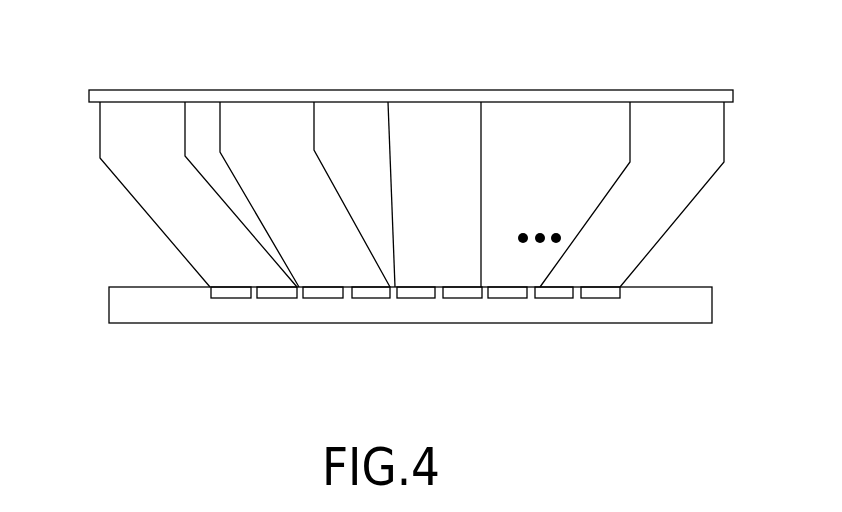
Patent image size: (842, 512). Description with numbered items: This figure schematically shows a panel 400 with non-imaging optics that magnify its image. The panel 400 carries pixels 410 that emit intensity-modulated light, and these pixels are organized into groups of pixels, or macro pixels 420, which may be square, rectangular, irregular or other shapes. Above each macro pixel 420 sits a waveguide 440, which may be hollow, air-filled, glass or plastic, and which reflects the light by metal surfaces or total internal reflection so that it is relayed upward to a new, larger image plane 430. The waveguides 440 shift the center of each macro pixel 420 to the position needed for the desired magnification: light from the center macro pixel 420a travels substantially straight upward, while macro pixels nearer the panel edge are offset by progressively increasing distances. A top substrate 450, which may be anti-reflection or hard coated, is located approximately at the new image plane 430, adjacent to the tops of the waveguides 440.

The panel 400 is at (712, 305).
The pixels 410 is at (315, 298).
The groups of pixels (macro pixels) 420 is at (622, 308).
The center macro pixel 420a is at (482, 308).
The new image plane 430 is at (733, 95).
The waveguides 440 is at (100, 133).
The top substrate 450 is at (152, 90).